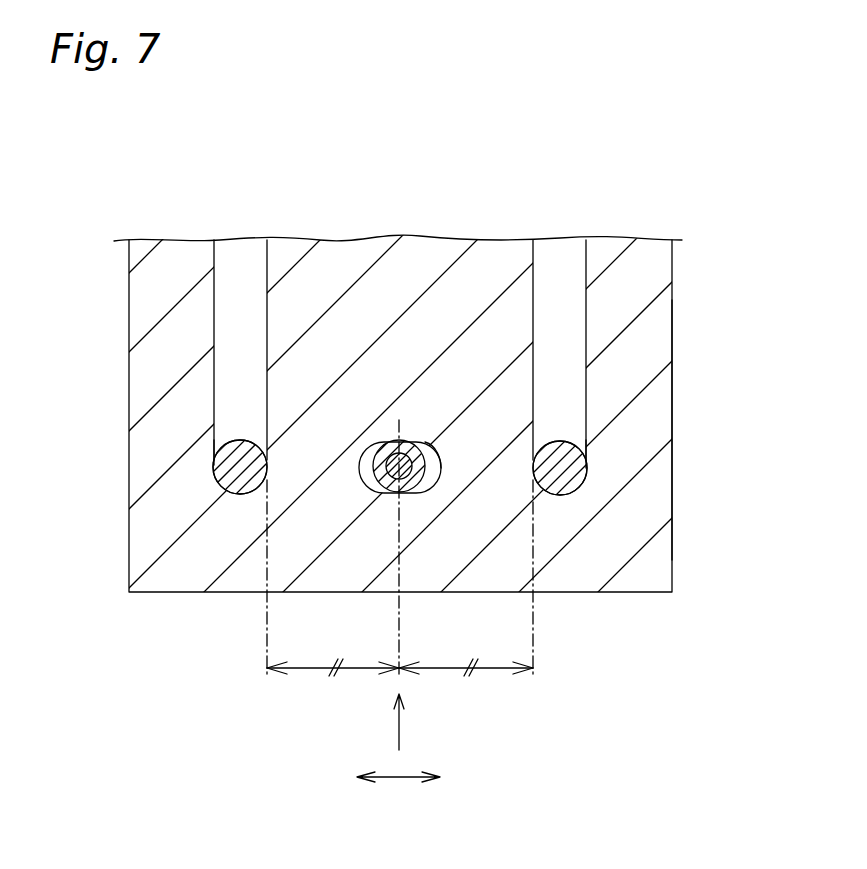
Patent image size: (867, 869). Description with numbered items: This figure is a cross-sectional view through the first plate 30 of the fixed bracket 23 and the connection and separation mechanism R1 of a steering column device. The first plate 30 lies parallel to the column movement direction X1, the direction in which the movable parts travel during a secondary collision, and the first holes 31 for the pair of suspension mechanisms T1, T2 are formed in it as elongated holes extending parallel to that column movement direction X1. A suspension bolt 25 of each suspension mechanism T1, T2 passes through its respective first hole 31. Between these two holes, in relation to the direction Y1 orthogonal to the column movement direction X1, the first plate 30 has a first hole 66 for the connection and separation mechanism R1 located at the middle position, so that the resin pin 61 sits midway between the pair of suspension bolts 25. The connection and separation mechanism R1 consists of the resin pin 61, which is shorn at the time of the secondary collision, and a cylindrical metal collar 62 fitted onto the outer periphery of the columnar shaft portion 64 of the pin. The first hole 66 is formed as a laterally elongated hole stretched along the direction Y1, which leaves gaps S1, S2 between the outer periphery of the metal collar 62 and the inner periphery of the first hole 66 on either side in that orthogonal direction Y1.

The first plate 30 is at (660, 324).
The fixed bracket 23 is at (684, 388).
The first hole 31 is at (575, 198).
The suspension bolt 25 is at (228, 467).
The suspension mechanism T1 is at (200, 477).
The suspension mechanism T2 is at (602, 482).
The metal collar 62 is at (367, 483).
The shaft portion 64 is at (383, 488).
The resin pin 61 is at (388, 444).
The gap S1 is at (362, 455).
The gap S2 is at (438, 457).
The connection and separation mechanism R1 is at (425, 510).
The first hole 66 is at (438, 488).
The column movement direction X1 is at (400, 735).
The direction orthogonal to the column movement direction Y1 is at (400, 778).